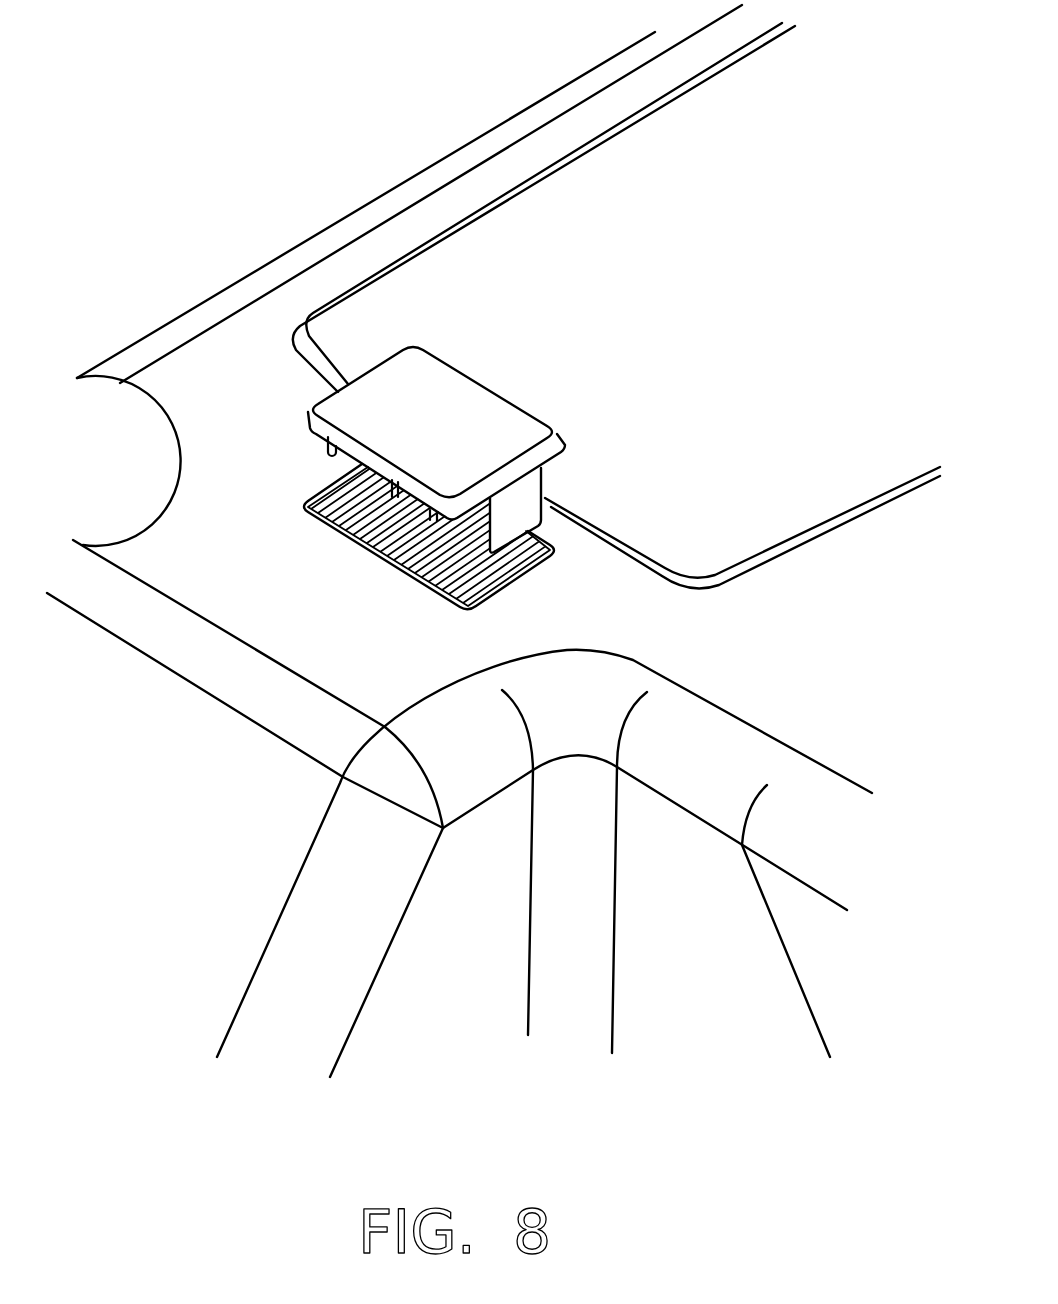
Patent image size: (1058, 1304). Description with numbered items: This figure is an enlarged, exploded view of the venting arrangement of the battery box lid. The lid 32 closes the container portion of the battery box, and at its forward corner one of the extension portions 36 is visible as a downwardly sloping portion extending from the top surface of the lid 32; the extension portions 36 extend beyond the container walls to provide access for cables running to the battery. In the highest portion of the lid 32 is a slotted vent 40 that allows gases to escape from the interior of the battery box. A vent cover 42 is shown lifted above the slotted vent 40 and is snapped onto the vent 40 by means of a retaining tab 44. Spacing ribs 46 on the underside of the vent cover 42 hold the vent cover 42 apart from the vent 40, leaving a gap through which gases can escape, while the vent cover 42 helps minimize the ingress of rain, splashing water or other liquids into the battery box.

The lid 32 is at (722, 281).
The extension portion 36 is at (215, 801).
The slotted vent 40 is at (334, 537).
The vent cover 42 is at (452, 431).
The retaining tab 44 is at (510, 498).
The spacing rib 46 is at (342, 474).